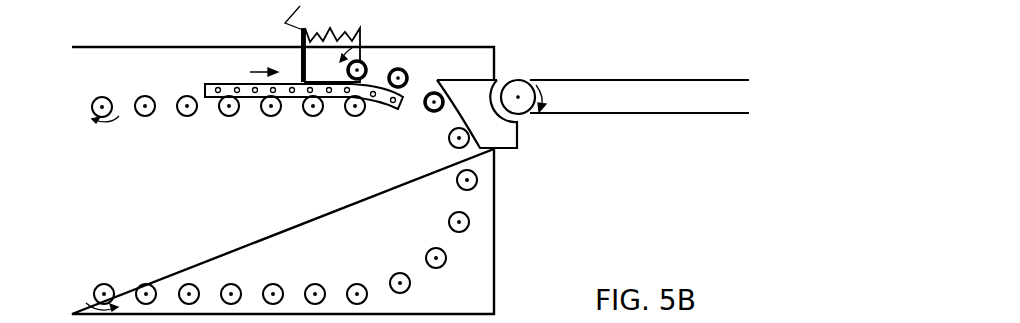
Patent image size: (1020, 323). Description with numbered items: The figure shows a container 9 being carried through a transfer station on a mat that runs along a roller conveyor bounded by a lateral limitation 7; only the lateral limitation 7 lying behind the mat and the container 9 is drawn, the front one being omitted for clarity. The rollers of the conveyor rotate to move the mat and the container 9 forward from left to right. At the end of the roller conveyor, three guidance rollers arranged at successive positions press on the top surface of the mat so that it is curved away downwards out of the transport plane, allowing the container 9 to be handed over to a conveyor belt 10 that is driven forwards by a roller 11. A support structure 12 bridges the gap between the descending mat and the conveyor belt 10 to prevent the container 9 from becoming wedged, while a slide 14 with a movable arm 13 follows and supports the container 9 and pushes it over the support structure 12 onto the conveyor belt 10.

The lateral limitation 7 is at (73, 62).
The slide 14 is at (302, 78).
The movable arm 13 is at (287, 22).
The container 9 is at (329, 70).
The support structure 12 is at (495, 142).
The roller 11 is at (519, 79).
The conveyor belt 10 is at (610, 79).